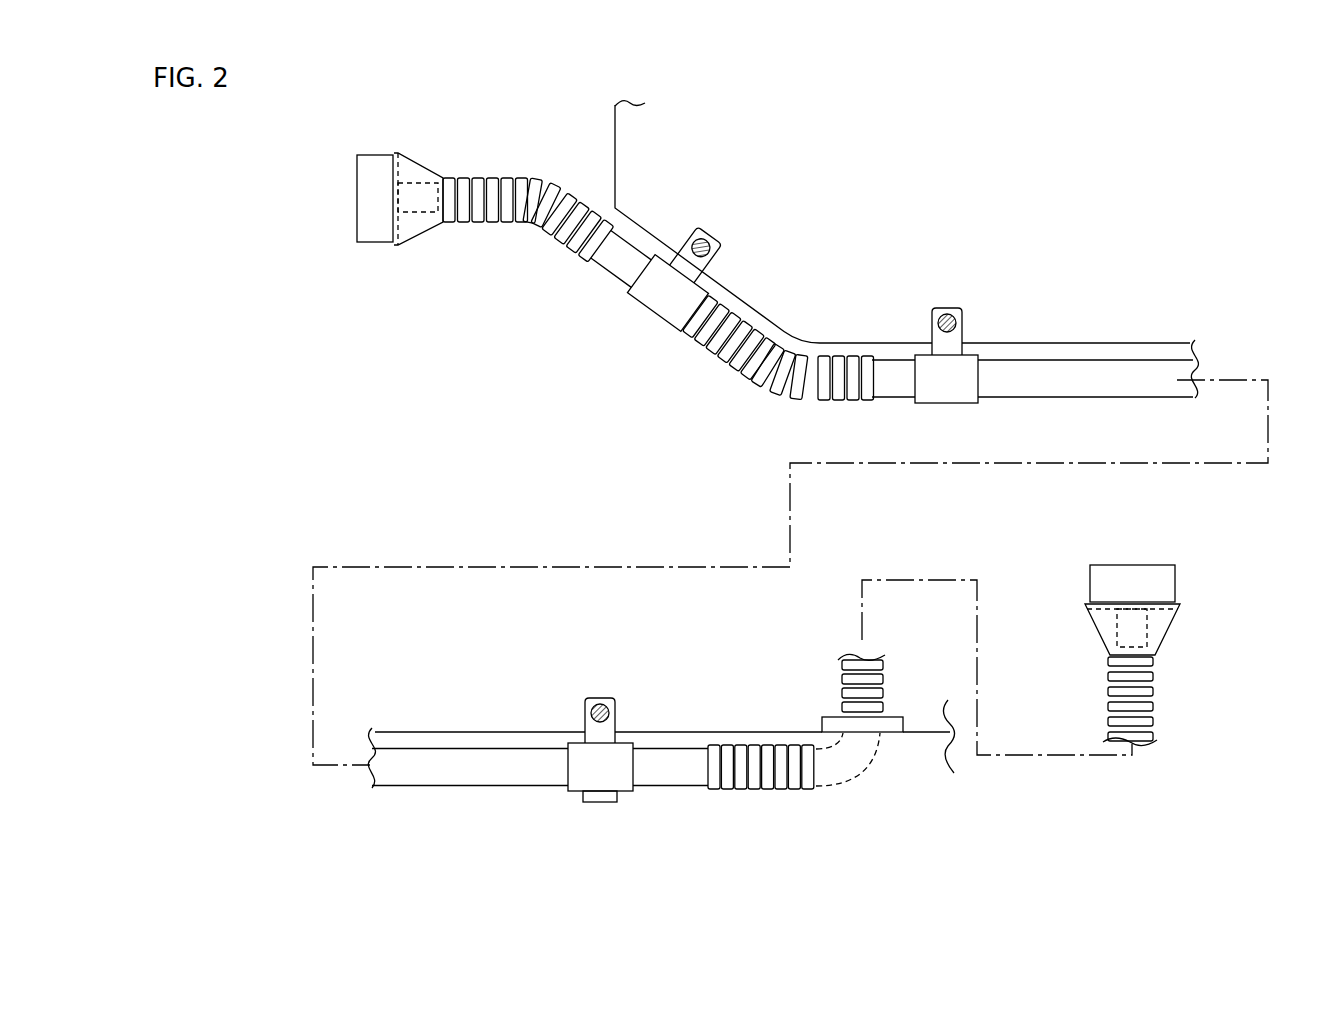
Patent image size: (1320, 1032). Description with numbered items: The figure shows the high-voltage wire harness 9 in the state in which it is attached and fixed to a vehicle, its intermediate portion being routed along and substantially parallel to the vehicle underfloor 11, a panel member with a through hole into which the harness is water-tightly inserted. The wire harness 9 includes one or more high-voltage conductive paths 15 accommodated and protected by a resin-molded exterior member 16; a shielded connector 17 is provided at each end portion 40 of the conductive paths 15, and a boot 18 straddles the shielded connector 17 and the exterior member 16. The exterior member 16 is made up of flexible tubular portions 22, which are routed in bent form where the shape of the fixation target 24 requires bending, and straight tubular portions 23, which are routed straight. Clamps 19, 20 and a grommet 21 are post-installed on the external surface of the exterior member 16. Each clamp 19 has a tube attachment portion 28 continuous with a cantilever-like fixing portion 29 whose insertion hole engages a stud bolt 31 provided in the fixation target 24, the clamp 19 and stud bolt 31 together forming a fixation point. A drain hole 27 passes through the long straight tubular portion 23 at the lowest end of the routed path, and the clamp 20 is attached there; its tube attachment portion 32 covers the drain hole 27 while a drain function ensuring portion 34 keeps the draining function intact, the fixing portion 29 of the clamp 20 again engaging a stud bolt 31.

The high-voltage wire harness 9 is at (622, 337).
The vehicle underfloor 11 is at (1195, 345).
The high-voltage conductive path 15 is at (1173, 387).
The exterior member 16 is at (1157, 377).
The shielded connector 17 is at (378, 233).
The boot 18 is at (420, 154).
The clamp 19 is at (661, 305).
The clamp 20 is at (715, 682).
The grommet 21 is at (890, 732).
The flexible tubular portion 22 is at (510, 177).
The straight tubular portion 23 is at (615, 282).
The fixation target 24 is at (628, 187).
The drain hole 27 is at (600, 800).
The tube attachment portion 28 is at (958, 382).
The fixing portion 29 is at (953, 338).
The stud bolt 31 is at (688, 235).
The tube attachment portion 32 is at (640, 762).
The drain function ensuring portion 34 is at (590, 803).
The end portion 40 is at (420, 202).